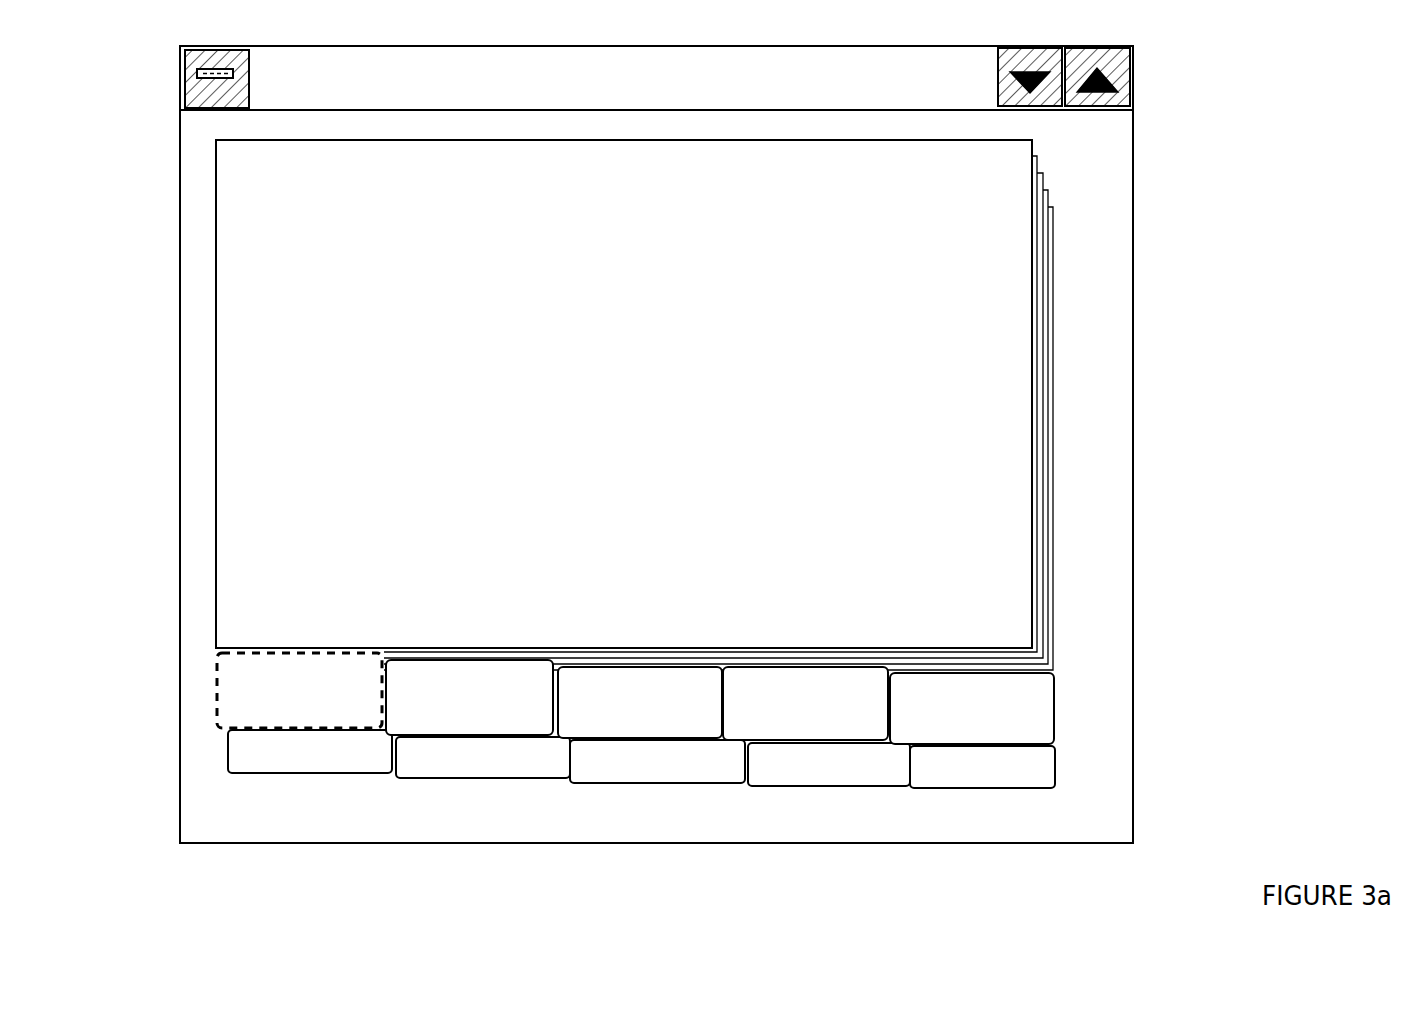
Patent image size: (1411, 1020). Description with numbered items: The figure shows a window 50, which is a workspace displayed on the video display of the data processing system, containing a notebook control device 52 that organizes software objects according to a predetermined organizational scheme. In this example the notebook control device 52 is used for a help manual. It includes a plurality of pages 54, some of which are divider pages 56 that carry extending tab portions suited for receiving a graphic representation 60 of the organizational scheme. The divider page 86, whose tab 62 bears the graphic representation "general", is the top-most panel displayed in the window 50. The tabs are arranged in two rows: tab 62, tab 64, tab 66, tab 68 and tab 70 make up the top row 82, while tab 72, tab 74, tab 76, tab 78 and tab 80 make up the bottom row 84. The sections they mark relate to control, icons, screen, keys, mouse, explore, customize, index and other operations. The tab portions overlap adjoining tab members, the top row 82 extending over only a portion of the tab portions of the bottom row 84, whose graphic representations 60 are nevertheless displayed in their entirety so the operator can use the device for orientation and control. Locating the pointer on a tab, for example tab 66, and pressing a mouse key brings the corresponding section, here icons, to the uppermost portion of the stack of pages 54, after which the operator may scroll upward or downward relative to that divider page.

The window 50 is at (1133, 140).
The notebook control device 52 is at (1099, 239).
The pages 54 is at (1088, 412).
The divider pages 56 is at (1051, 531).
The graphic representation 60 is at (1060, 777).
The tab 62 is at (250, 690).
The tab 64 is at (420, 712).
The tab 66 is at (592, 702).
The tab 68 is at (763, 708).
The tab 70 is at (942, 725).
The tab 72 is at (268, 747).
The tab 74 is at (437, 745).
The tab 76 is at (614, 752).
The tab 78 is at (808, 772).
The tab 80 is at (958, 772).
The top row 82 is at (180, 606).
The bottom row 84 is at (190, 768).
The divider page 86 is at (312, 428).